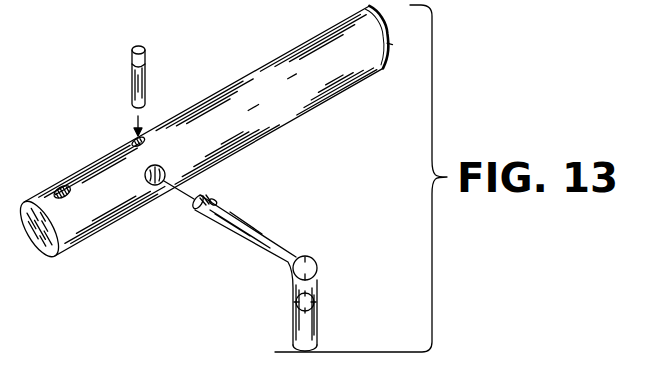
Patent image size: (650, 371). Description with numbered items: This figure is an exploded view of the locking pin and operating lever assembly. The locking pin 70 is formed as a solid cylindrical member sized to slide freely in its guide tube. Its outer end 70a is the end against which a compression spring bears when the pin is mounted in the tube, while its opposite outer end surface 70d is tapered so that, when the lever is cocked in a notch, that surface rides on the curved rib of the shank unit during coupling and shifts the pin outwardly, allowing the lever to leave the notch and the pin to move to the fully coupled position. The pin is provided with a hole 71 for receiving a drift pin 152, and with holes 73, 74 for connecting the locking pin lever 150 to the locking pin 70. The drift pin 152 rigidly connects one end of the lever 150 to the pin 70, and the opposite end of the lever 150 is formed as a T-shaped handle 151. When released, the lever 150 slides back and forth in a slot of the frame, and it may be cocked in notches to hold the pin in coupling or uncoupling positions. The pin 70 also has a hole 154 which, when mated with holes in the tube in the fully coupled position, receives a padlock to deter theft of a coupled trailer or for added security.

The locking pin 70 is at (252, 115).
The outer end of pin 70a is at (35, 260).
The outer end surface of locking pin 70d is at (387, 47).
The hole 71 is at (131, 147).
The hole 73 is at (144, 185).
The hole 74 is at (216, 201).
The locking pin lever 150 is at (245, 238).
The T-shaped handle 151 is at (314, 300).
The drift pin 152 is at (132, 77).
The hole 154 is at (63, 185).